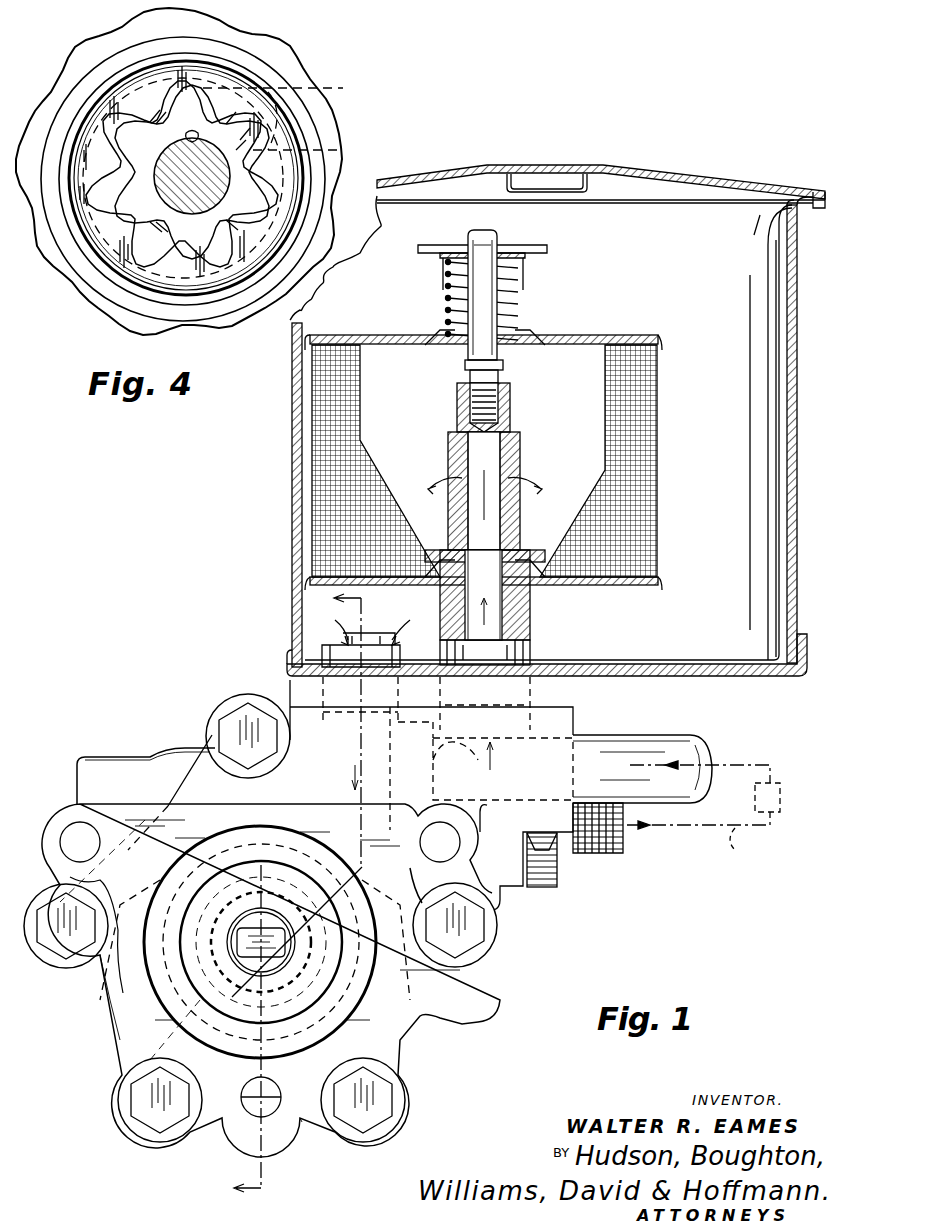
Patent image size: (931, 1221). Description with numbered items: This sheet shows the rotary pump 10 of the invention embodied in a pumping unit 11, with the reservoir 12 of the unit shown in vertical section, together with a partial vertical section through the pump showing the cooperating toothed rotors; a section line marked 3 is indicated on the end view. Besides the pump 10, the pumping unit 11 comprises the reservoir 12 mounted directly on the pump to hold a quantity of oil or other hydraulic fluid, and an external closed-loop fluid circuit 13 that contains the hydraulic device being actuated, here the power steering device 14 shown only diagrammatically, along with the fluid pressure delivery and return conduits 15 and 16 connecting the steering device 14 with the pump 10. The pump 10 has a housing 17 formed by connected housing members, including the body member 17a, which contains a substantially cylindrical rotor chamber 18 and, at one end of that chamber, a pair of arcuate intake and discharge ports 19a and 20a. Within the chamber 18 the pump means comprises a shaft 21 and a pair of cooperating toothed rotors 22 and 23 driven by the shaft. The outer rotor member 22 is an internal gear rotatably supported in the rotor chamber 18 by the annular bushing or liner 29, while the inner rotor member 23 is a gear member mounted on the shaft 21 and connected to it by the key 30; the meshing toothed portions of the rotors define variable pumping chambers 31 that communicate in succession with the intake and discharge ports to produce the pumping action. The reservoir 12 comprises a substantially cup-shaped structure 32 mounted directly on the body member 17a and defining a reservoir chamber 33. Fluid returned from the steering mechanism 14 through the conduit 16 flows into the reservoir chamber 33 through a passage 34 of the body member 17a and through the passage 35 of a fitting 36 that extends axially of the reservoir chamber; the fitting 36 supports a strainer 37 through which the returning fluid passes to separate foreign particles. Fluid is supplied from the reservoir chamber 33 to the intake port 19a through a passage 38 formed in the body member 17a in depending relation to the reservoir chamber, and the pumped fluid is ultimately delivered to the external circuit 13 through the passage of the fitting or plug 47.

In FIG. 1, the section line 3- 3 is at (285, 894).
In FIG. 1, the rotary pump 10 is at (478, 1025).
In FIG. 1, the pumping unit 11 is at (250, 603).
In FIG. 1, the reservoir 12 is at (282, 507).
In FIG. 1, the external closed-loop fluid circuit 13 is at (735, 850).
In FIG. 1, the power steering device 14 is at (782, 797).
In FIG. 1, the fluid pressure delivery conduit 15 is at (672, 832).
In FIG. 1, the return conduit 16 is at (660, 740).
In FIG. 1, the housing 17 is at (271, 952).
In FIG. 1, the body member 17a is at (402, 1076).
In FIG. 4, the rotor chamber 18 is at (107, 88).
In FIG. 4, the intake port 19a is at (110, 166).
In FIG. 1, the intake port 19a is at (380, 982).
In FIG. 4, the discharge port 20a is at (114, 196).
In FIG. 1, the discharge port 20a is at (140, 1010).
In FIG. 4, the shaft 21 is at (154, 178).
In FIG. 1, the shaft 21 is at (258, 962).
In FIG. 4, the outer rotor member 22 is at (86, 118).
In FIG. 4, the inner rotor member 23 is at (233, 131).
In FIG. 4, the annular bushing or liner 29 is at (233, 95).
In FIG. 4, the key 30 is at (186, 132).
In FIG. 4, the variable pumping chambers 31 is at (180, 95).
In FIG. 1, the cup-shaped structure 32 is at (790, 420).
In FIG. 1, the reservoir chamber 33 is at (775, 520).
In FIG. 1, the passage 34 is at (438, 760).
In FIG. 1, the passage 35 is at (490, 532).
In FIG. 1, the fitting 36 is at (530, 655).
In FIG. 1, the strainer 37 is at (640, 468).
In FIG. 4, the passage 38 is at (292, 86).
In FIG. 1, the passage 38 is at (408, 762).
In FIG. 1, the fitting or plug 47 is at (560, 858).